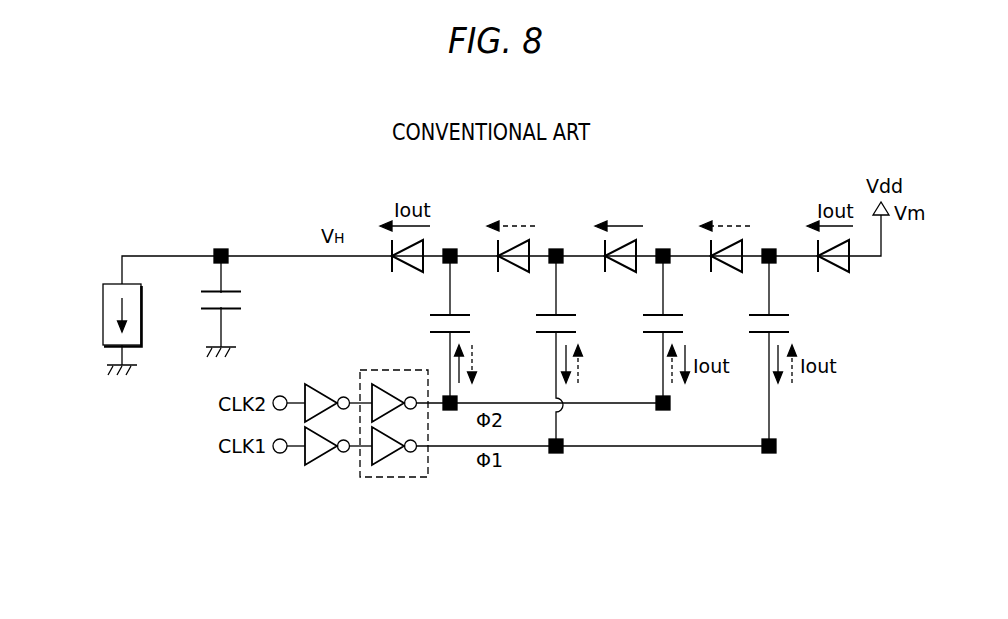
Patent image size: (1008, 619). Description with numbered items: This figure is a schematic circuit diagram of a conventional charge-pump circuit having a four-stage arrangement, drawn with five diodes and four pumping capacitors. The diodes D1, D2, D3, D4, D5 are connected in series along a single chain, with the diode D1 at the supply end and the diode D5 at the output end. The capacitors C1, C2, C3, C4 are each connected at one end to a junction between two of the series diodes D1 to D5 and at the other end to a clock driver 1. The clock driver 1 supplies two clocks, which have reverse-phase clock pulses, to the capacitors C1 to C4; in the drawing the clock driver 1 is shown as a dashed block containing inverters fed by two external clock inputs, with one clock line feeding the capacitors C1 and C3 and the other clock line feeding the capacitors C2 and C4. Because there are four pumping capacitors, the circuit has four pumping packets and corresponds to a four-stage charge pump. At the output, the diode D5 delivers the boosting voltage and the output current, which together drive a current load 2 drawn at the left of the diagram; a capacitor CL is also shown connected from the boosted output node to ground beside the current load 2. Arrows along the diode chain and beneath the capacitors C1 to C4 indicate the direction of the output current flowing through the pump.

The clock driver 1 is at (392, 370).
The current load 2 is at (141, 312).
The diode D1 is at (833, 270).
The diode D2 is at (726, 270).
The diode D3 is at (620, 270).
The diode D4 is at (513, 270).
The diode D5 is at (407, 270).
The capacitor C1 is at (783, 354).
The capacitor C2 is at (677, 333).
The capacitor C3 is at (570, 354).
The capacitor C4 is at (464, 333).
The load capacitor CL is at (234, 310).